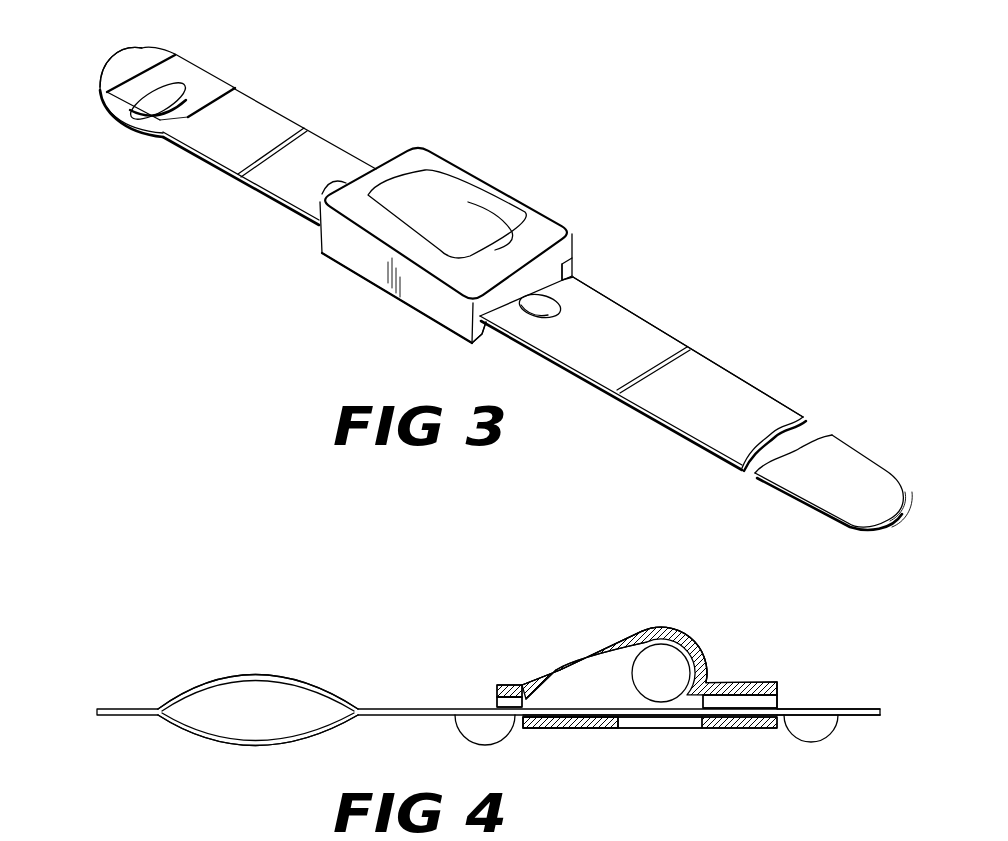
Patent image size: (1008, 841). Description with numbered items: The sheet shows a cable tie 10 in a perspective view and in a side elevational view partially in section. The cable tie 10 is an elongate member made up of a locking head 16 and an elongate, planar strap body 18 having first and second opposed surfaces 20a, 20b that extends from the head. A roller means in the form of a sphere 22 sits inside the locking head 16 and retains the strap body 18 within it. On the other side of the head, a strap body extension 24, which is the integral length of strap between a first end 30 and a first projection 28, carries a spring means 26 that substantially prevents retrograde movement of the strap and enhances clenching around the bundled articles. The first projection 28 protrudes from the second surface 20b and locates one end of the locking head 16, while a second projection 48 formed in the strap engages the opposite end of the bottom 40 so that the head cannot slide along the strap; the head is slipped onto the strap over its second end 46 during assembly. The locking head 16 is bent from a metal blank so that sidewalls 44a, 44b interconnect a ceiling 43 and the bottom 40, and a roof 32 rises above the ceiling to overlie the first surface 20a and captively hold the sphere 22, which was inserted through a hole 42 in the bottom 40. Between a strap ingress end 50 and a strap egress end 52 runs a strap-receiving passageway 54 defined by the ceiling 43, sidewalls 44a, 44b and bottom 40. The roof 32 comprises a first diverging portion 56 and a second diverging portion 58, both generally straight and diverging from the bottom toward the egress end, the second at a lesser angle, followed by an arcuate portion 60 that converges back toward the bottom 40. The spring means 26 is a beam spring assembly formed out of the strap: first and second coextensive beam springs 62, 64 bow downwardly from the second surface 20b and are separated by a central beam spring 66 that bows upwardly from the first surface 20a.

In FIG. 3, the cable tie 10 is at (545, 118).
In FIG. 4, the cable tie 10 is at (500, 553).
In FIG. 3, the locking head 16 is at (559, 207).
In FIG. 4, the locking head 16 is at (637, 677).
In FIG. 3, the strap body 18 is at (660, 315).
In FIG. 3, the first surface 20a is at (718, 380).
In FIG. 4, the first surface 20a is at (838, 709).
In FIG. 4, the second surface 20b is at (857, 717).
In FIG. 4, the sphere 22 is at (651, 683).
In FIG. 3, the strap body extension 24 is at (277, 118).
In FIG. 4, the strap body extension 24 is at (380, 708).
In FIG. 3, the spring means 26 is at (138, 154).
In FIG. 4, the spring means 26 is at (205, 640).
In FIG. 3, the first projection 28 is at (408, 160).
In FIG. 4, the first projection 28 is at (490, 728).
In FIG. 3, the first end 30 is at (122, 52).
In FIG. 4, the first end 30 is at (97, 709).
In FIG. 3, the roof 32 is at (512, 208).
In FIG. 4, the roof 32 is at (633, 616).
In FIG. 3, the bottom 40 is at (497, 332).
In FIG. 4, the bottom 40 is at (587, 730).
In FIG. 4, the hole 42 is at (660, 727).
In FIG. 3, the ceiling 43 is at (560, 238).
In FIG. 4, the ceiling 43 is at (507, 685).
In FIG. 3, the sidewall 44a is at (427, 300).
In FIG. 4, the sidewall 44b is at (715, 700).
In FIG. 3, the second end 46 is at (900, 512).
In FIG. 3, the second projection 48 is at (540, 303).
In FIG. 4, the second projection 48 is at (823, 732).
In FIG. 4, the strap ingress end 50 is at (498, 687).
In FIG. 3, the strap egress end 52 is at (573, 277).
In FIG. 4, the strap egress end 52 is at (778, 688).
In FIG. 4, the strap-receiving passageway 54 is at (583, 706).
In FIG. 4, the first diverging portion 56 is at (540, 680).
In FIG. 4, the second diverging portion 58 is at (597, 647).
In FIG. 4, the arcuate portion 60 is at (685, 628).
In FIG. 3, the first beam spring 62 is at (202, 73).
In FIG. 4, the first beam spring 62 is at (252, 747).
In FIG. 3, the second beam spring 64 is at (185, 90).
In FIG. 3, the central beam spring 66 is at (155, 82).
In FIG. 4, the central beam spring 66 is at (255, 677).